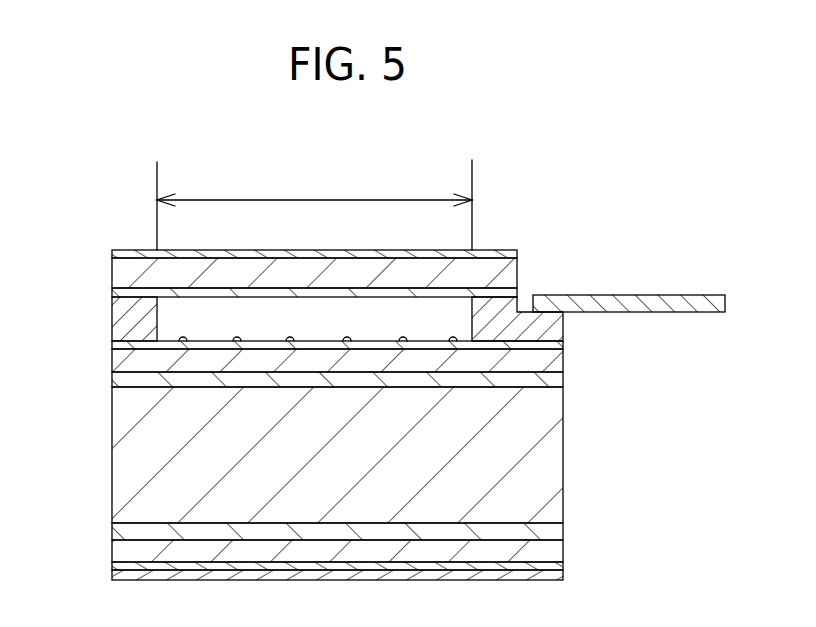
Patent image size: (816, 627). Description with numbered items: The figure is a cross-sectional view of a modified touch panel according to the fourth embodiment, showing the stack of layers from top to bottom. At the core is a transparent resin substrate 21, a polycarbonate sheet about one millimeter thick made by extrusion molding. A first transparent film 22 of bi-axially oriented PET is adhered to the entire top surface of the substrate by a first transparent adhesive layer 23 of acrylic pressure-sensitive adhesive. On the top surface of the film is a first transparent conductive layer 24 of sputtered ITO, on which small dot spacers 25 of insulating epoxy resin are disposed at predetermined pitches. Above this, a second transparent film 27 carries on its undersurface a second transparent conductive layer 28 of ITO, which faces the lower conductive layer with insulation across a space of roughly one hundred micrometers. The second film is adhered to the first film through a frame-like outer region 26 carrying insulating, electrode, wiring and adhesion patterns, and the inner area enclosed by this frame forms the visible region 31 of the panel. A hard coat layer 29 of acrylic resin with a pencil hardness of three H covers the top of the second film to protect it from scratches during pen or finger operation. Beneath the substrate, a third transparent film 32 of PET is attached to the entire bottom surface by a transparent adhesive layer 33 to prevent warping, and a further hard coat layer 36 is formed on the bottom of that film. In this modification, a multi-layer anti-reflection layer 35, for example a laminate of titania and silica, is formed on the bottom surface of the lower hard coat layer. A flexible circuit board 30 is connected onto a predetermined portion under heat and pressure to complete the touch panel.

The transparent resin substrate 21 is at (120, 470).
The first transparent film 22 is at (120, 367).
The first transparent adhesive layer 23 is at (553, 380).
The first transparent conductive layer 24 is at (556, 343).
The dot spacers 25 is at (180, 341).
The outer region 26 is at (122, 331).
The second transparent film 27 is at (488, 270).
The second transparent conductive layer 28 is at (118, 293).
The hard coat layer 29 is at (120, 255).
The flexible circuit board 30 is at (617, 300).
The visible region 31 is at (307, 200).
The third transparent film 32 is at (120, 547).
The transparent adhesive layer 33 is at (563, 525).
The anti-reflection layer 35 is at (117, 576).
The hard coat layer 36 is at (565, 561).